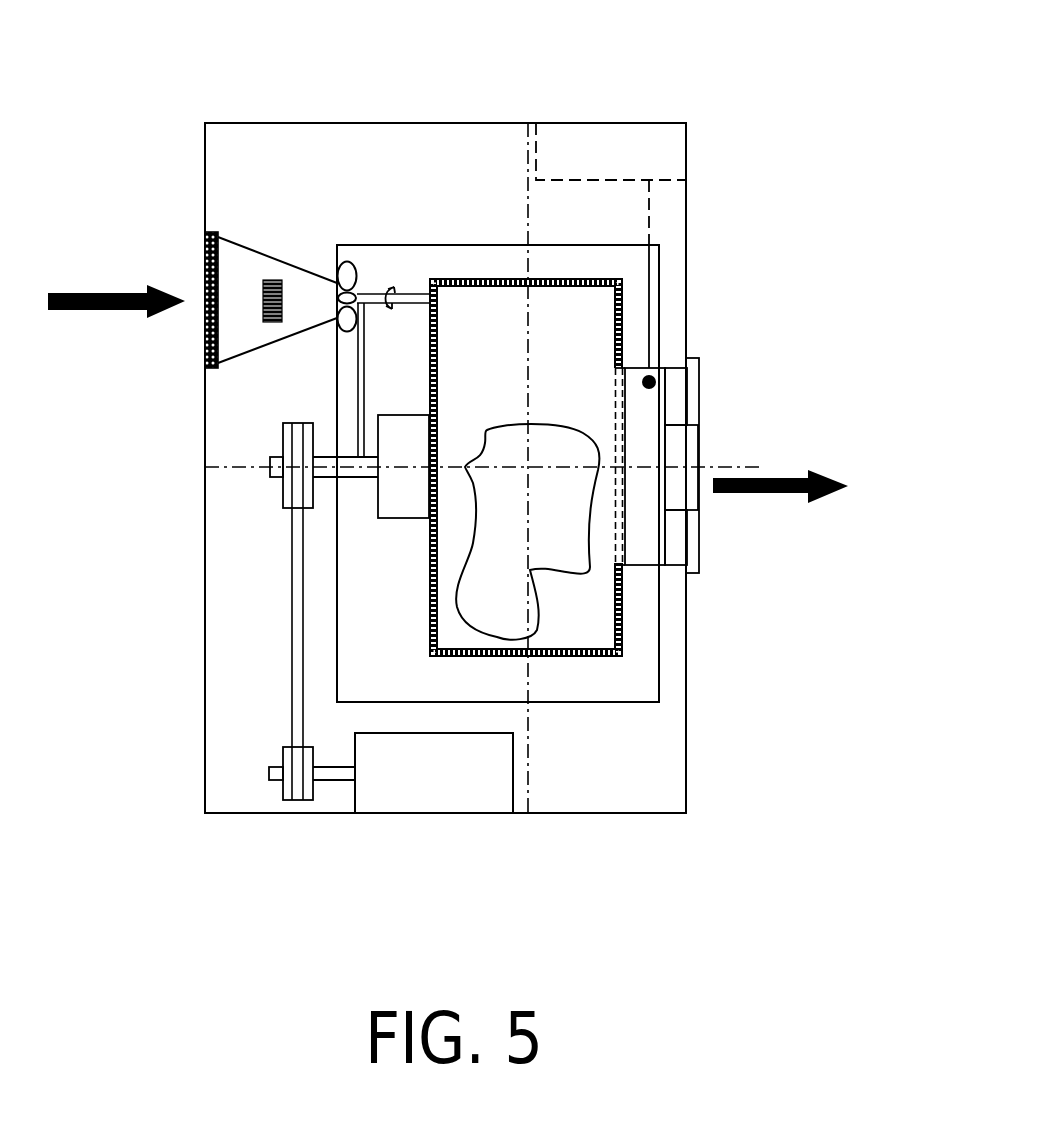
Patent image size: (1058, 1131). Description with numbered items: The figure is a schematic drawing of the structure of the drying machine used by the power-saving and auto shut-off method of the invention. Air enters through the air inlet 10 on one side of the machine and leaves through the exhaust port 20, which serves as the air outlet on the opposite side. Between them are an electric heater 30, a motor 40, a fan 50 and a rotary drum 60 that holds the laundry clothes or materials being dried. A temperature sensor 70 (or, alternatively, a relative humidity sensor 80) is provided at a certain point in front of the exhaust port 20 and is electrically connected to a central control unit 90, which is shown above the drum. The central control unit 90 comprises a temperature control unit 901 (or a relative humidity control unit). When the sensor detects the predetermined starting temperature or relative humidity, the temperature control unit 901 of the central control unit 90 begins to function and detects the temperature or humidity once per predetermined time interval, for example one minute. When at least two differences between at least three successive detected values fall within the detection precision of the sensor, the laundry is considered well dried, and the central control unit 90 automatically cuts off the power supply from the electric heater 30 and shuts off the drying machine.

The air inlet 10 is at (207, 350).
The exhaust port 20 is at (685, 492).
The electric heater 30 is at (263, 305).
The motor 40 is at (440, 793).
The fan 50 is at (345, 270).
The rotary drum 60 is at (610, 650).
The temperature sensor 70 is at (768, 437).
The relative humidity sensor 80 is at (649, 382).
The central control unit 90 is at (668, 136).
The temperature control unit 901 is at (611, 151).